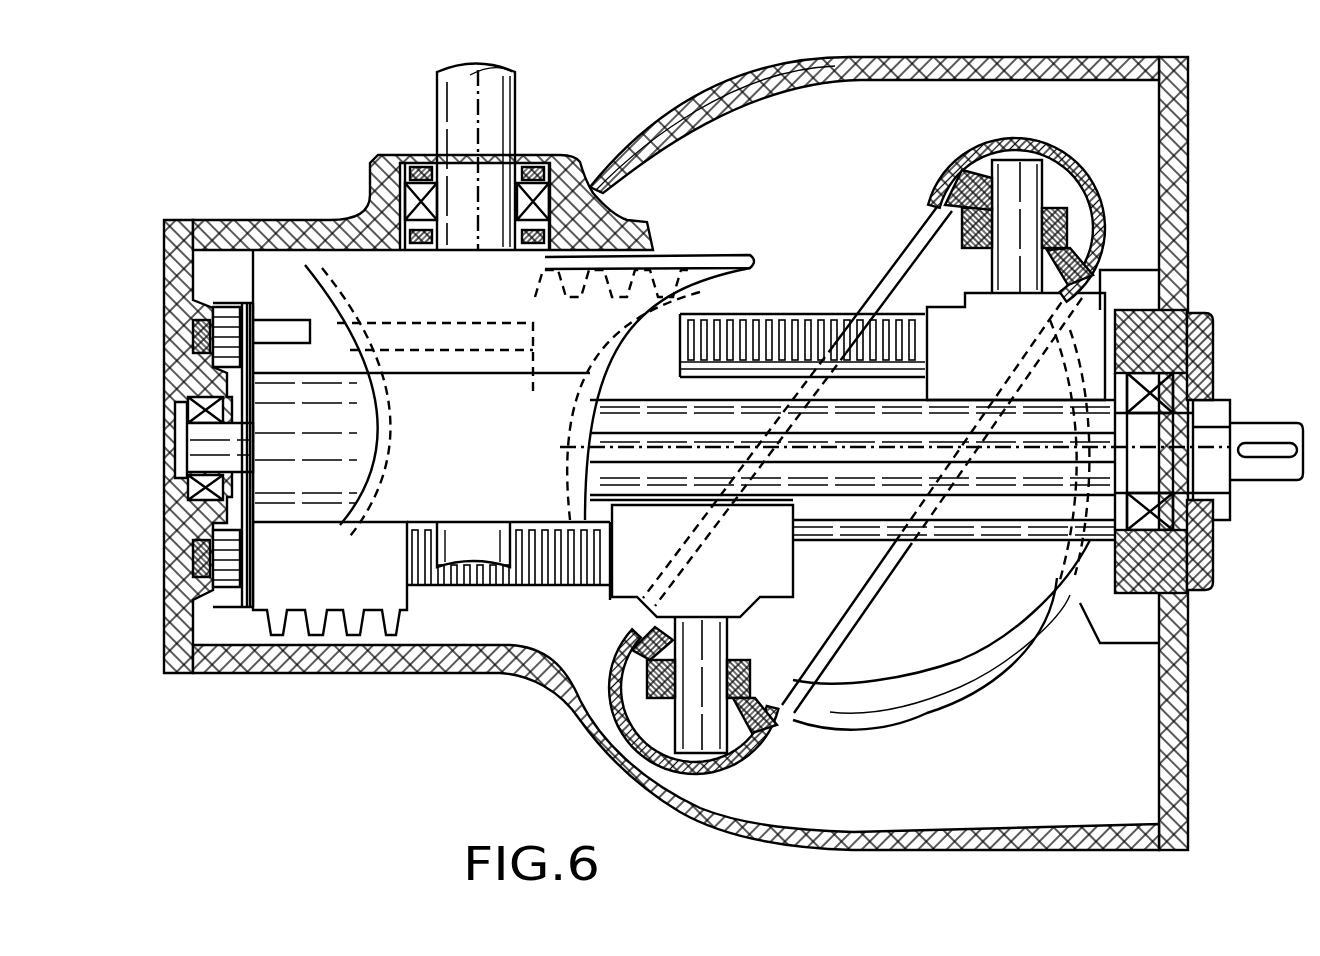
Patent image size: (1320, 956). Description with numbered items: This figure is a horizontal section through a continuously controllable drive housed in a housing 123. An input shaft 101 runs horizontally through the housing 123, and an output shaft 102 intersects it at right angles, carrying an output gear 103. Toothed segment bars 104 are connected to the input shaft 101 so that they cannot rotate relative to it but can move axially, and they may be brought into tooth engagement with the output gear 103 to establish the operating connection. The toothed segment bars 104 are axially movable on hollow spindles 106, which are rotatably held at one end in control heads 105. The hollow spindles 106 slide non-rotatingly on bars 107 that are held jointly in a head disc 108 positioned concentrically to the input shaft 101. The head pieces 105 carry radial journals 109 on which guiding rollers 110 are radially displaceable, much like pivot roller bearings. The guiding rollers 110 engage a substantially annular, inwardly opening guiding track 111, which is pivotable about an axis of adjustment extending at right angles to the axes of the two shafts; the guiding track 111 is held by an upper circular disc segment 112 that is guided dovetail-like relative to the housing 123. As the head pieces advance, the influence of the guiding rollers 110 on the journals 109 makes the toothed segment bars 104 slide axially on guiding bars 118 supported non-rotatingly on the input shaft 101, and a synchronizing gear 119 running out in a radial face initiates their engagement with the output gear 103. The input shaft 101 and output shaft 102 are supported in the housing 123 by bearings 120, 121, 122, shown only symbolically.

The input shaft 101 is at (1097, 423).
The output shaft 102 is at (513, 103).
The output gear 103 is at (497, 450).
The toothed segment bars 104 is at (663, 327).
The control heads 105 is at (950, 320).
The hollow spindles 106 is at (777, 320).
The bars 107 is at (277, 327).
The head disc 108 is at (242, 303).
The radial journals 109 is at (1012, 170).
The guiding rollers 110 is at (1053, 223).
The guiding track 111 is at (887, 257).
The upper circular disc segment 112 is at (997, 613).
The guiding bars 118 is at (303, 380).
The synchronizing gear 119 is at (380, 293).
The bearing 120 is at (190, 497).
The bearing 121 is at (1187, 527).
The bearing 122 is at (403, 200).
The housing 123 is at (1178, 73).